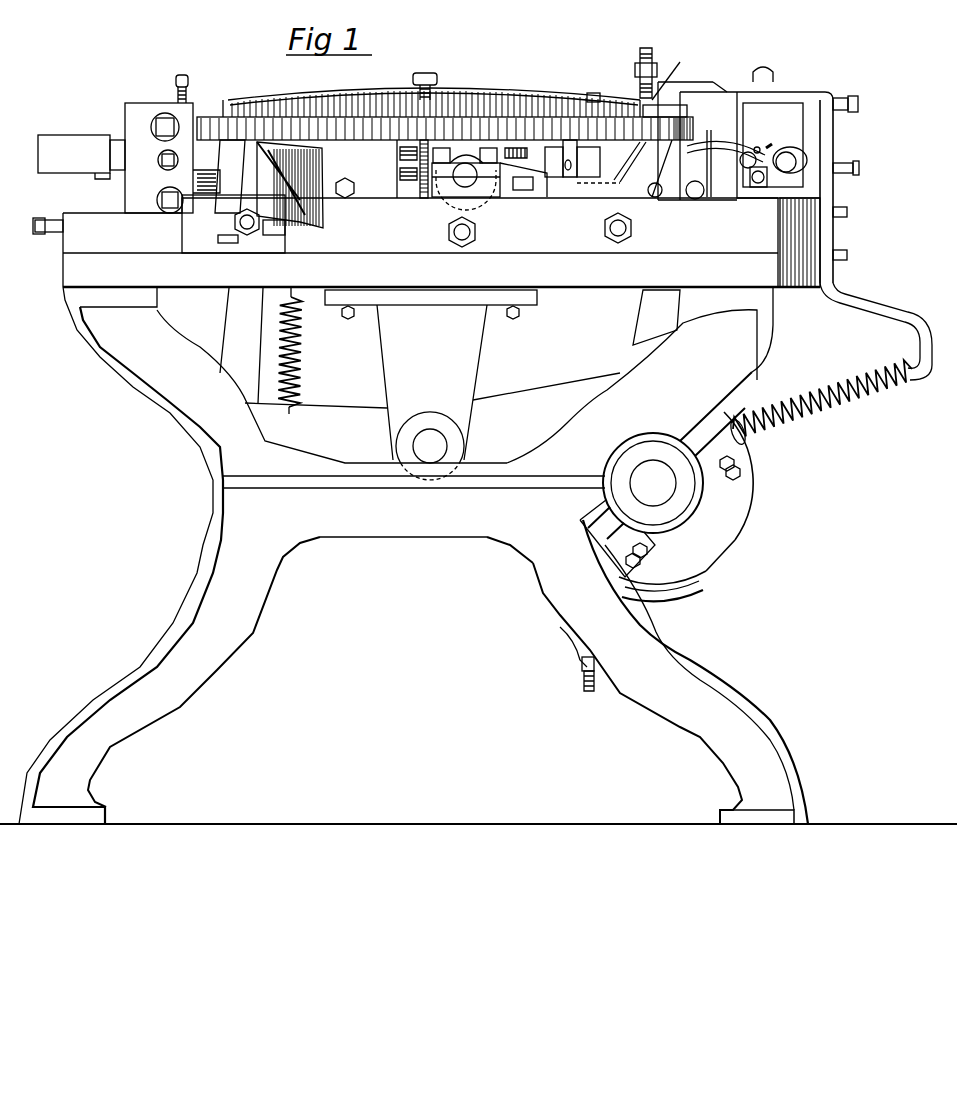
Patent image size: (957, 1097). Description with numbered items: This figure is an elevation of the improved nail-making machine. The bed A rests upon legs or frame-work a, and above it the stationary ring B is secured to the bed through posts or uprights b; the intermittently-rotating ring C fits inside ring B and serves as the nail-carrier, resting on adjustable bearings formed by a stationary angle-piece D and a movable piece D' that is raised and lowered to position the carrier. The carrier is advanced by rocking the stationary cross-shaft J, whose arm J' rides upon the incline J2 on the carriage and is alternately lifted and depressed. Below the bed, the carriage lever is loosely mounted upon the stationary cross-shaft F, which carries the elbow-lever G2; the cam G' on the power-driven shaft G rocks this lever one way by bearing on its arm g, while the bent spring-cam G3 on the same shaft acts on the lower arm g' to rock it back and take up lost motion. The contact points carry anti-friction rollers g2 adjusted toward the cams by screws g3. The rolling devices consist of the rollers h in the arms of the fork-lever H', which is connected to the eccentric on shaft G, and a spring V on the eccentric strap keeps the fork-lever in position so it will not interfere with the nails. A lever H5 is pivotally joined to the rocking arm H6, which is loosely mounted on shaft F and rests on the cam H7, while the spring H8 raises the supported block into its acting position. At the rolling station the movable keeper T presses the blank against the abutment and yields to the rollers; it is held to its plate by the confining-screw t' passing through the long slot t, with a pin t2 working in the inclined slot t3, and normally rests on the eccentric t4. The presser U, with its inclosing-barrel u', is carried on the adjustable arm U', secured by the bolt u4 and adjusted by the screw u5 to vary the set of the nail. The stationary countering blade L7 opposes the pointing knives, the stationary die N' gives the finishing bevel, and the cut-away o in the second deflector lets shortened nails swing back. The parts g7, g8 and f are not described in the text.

The legs or frame-work a is at (478, 555).
The bed A is at (426, 242).
The stationary ring B is at (318, 136).
The intermittently-rotating ring C is at (350, 103).
The countering blade L7 is at (81, 157).
The posts or uprights b is at (215, 172).
The stationary die N' is at (225, 176).
The cross-shaft J is at (456, 194).
The arm J' is at (513, 189).
The incline J2 is at (567, 200).
The angle-piece D is at (552, 184).
The movable piece D' is at (595, 160).
The cut-away o is at (568, 165).
The lever arm f is at (645, 168).
The rollers h is at (662, 185).
The movable keeper T is at (700, 133).
The inclosing-barrel u' is at (654, 71).
The presser U is at (677, 70).
The adjustable arm U' is at (716, 74).
The bolt u4 is at (766, 63).
The screw u5 is at (860, 175).
The long slot t is at (738, 148).
The confining-screw t' is at (793, 156).
The pin t2 is at (757, 148).
The inclined slot t3 is at (769, 146).
The eccentric t4 is at (742, 163).
The lever H5 is at (241, 345).
The spring H8 is at (301, 358).
The rocking arm H6 is at (432, 403).
The fork-lever H' is at (643, 317).
The cross-shaft F is at (430, 446).
The elbow-lever G2 is at (437, 382).
The arm g is at (632, 386).
The power-driven shaft G is at (670, 455).
The cam G' is at (660, 516).
The cam H7 is at (757, 480).
The spring-cam G3 is at (748, 446).
The segment lug g7 is at (740, 518).
The segment lug g8 is at (735, 558).
The spring V is at (803, 392).
The lower arm g' is at (506, 567).
The anti-friction rollers g2 is at (568, 642).
The screws g3 is at (588, 684).